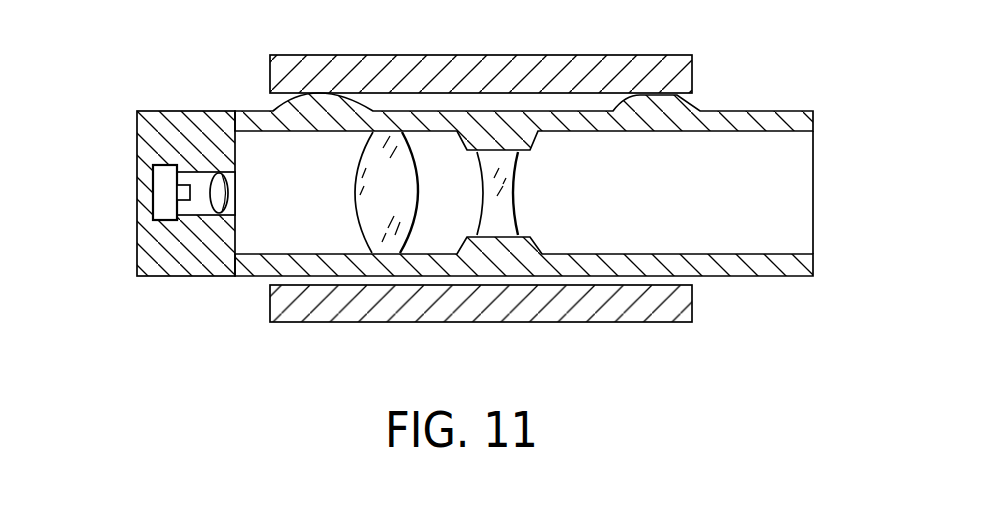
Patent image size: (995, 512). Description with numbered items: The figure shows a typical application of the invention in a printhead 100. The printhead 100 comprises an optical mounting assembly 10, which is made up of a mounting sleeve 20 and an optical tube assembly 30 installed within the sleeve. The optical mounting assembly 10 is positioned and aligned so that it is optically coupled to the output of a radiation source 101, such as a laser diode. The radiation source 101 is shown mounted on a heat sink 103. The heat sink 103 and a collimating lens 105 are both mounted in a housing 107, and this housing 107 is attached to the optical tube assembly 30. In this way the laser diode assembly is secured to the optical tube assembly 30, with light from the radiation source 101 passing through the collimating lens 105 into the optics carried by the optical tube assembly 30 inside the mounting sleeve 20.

The optical mounting assembly 10 is at (336, 342).
The mounting sleeve 20 is at (692, 322).
The optical tube assembly 30 is at (815, 122).
The printhead 100 is at (480, 372).
The radiation source 101 is at (203, 170).
The heat sink 103 is at (137, 200).
The collimating lens 105 is at (212, 200).
The housing 107 is at (137, 277).